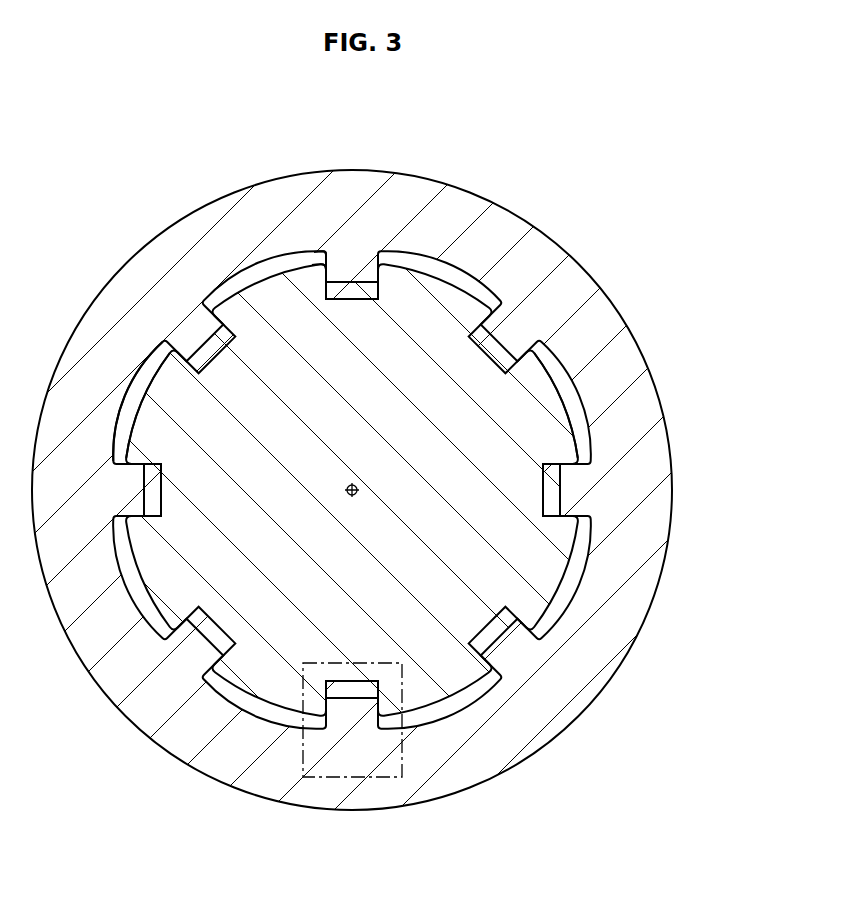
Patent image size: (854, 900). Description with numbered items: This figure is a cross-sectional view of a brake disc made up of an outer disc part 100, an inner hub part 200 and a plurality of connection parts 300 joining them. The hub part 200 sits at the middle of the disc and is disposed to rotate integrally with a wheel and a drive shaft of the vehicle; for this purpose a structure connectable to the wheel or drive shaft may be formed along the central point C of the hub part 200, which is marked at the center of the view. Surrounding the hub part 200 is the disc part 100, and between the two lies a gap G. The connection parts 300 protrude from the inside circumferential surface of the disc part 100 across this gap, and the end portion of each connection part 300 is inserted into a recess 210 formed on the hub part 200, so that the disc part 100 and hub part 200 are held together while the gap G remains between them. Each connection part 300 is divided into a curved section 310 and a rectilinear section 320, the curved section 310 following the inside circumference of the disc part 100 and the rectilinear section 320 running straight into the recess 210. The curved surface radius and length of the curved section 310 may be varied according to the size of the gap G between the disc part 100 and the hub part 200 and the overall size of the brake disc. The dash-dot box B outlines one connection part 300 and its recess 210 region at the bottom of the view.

The disc part 100 is at (503, 222).
The hub part 200 is at (535, 432).
The recess 210 is at (497, 341).
The connection part 300 is at (353, 262).
The curved section 310 is at (318, 251).
The rectilinear section 320 is at (322, 266).
The gap G is at (140, 388).
The central point C is at (358, 489).
The enlarged detail region B is at (352, 778).